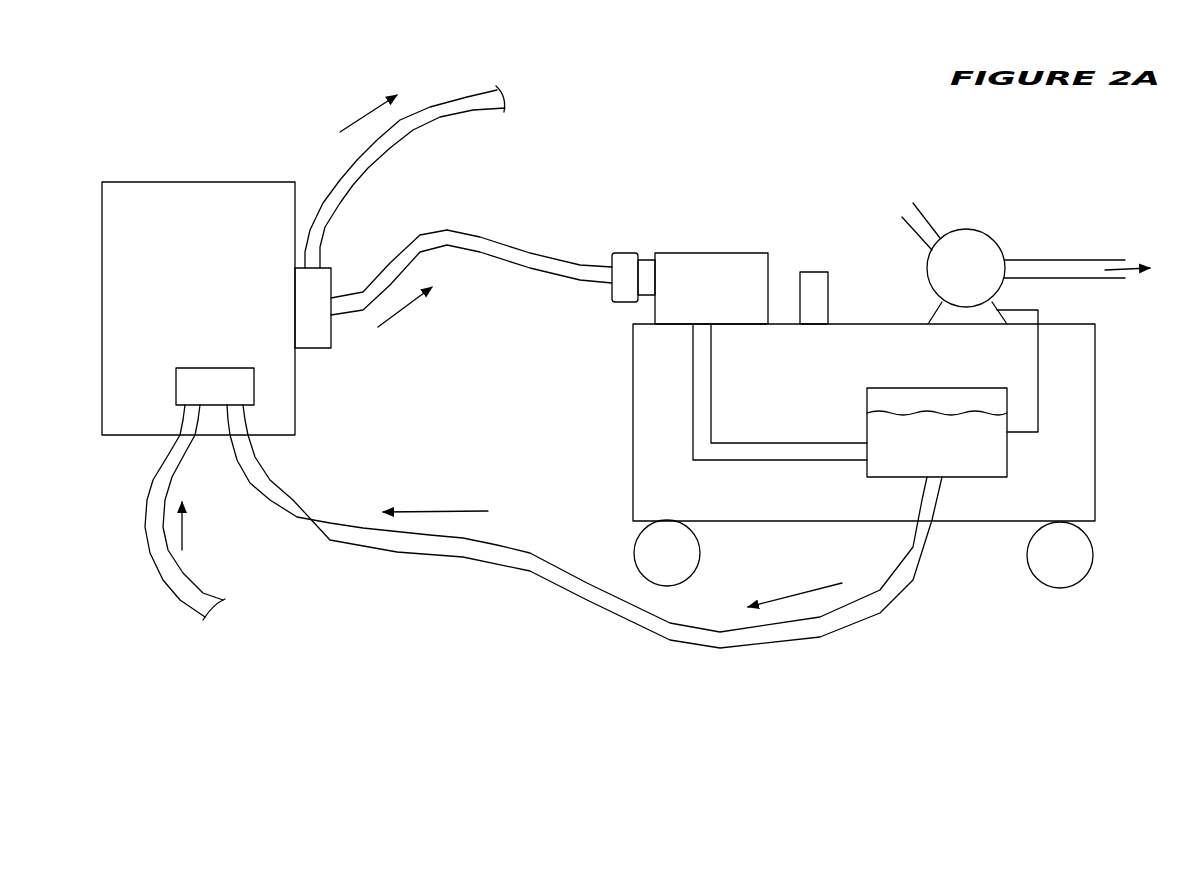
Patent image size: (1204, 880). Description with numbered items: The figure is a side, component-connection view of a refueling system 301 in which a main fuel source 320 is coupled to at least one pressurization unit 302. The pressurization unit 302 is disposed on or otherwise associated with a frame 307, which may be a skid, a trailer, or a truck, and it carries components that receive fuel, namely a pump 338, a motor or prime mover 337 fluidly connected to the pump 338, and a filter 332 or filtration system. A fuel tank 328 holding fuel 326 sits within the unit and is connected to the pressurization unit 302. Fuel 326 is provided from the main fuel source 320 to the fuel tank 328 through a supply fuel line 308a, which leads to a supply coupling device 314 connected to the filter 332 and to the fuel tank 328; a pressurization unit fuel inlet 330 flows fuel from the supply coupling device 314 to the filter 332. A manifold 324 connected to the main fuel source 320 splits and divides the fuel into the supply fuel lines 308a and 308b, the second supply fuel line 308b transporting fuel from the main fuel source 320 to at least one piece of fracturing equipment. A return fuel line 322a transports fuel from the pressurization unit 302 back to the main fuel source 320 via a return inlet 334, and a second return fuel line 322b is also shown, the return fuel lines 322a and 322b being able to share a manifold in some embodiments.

The refueling system 301 is at (1120, 680).
The pressurization unit 302 is at (1072, 509).
The frame 307 is at (1095, 378).
The supply fuel line 308a is at (453, 230).
The supply fuel line 308b is at (448, 120).
The supply coupling device 314 is at (626, 253).
The main fuel source 320 is at (218, 232).
The return fuel line 322a is at (560, 547).
The return fuel line 322b is at (210, 574).
The manifold 324 is at (312, 348).
The fuel 326 is at (957, 459).
The fuel tank 328 is at (889, 388).
The pressurization unit fuel inlet 330 is at (647, 260).
The filter 332 is at (732, 302).
The return inlet 334 is at (233, 399).
The prime mover 337 is at (938, 306).
The pump 338 is at (992, 238).